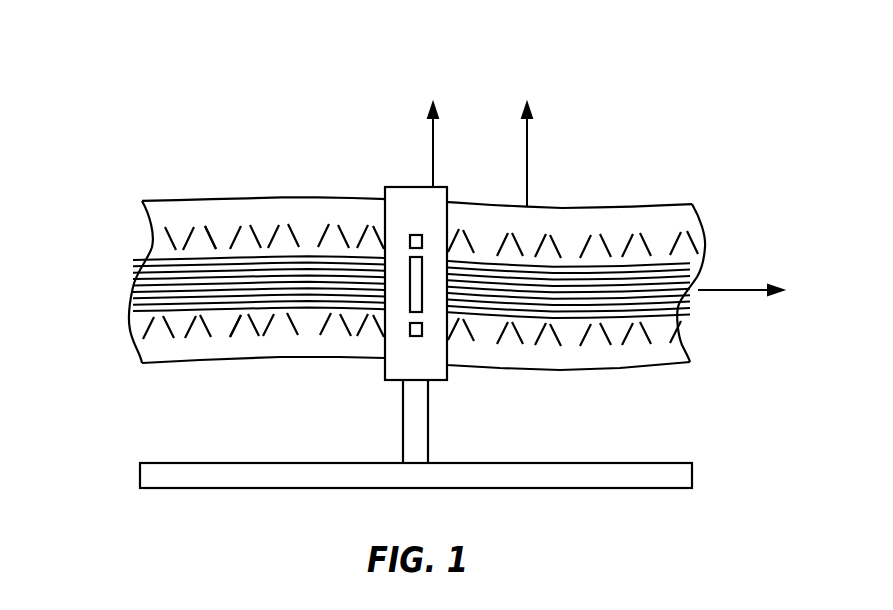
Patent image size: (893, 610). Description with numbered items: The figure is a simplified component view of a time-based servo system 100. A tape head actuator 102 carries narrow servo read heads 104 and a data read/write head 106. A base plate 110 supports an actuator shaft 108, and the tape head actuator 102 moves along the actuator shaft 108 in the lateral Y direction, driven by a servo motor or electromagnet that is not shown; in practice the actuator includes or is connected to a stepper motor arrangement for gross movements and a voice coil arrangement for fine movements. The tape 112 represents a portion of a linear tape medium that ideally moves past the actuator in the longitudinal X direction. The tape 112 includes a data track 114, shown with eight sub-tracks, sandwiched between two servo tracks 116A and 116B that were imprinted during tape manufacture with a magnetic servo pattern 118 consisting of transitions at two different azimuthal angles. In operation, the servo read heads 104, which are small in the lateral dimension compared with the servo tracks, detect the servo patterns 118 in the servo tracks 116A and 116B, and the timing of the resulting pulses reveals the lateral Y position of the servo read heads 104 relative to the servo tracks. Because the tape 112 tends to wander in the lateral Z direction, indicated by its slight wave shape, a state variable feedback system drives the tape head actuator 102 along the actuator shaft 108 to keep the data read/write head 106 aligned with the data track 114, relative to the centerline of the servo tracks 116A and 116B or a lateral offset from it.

The time-based servo system 100 is at (418, 263).
The tape head actuator 102 is at (427, 252).
The narrow servo read heads 104 is at (410, 245).
The data read/write head 106 is at (423, 288).
The actuator shaft 108 is at (430, 405).
The base plate 110 is at (172, 462).
The tape 112 is at (308, 195).
The data track 114 is at (117, 312).
The servo track 116A is at (117, 250).
The servo track 116B is at (117, 318).
The magnetic servo pattern 118 is at (231, 322).